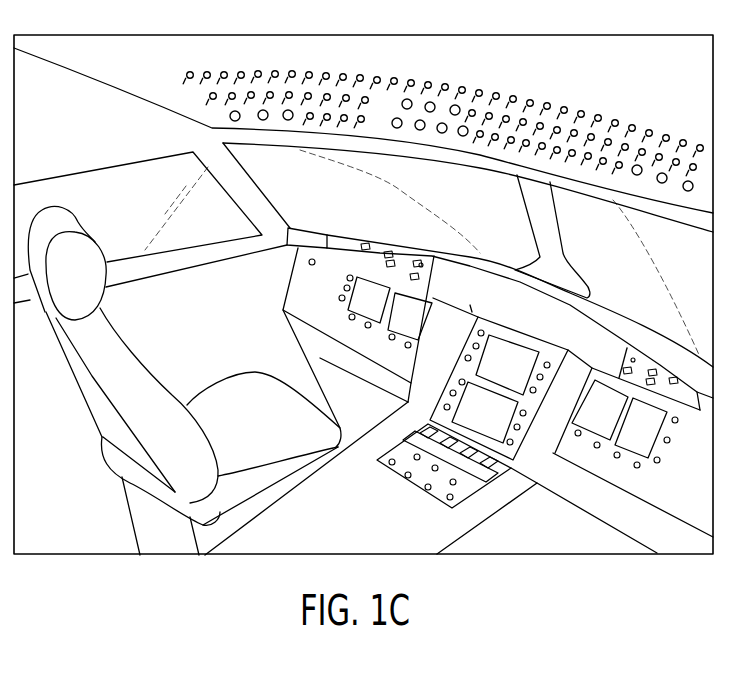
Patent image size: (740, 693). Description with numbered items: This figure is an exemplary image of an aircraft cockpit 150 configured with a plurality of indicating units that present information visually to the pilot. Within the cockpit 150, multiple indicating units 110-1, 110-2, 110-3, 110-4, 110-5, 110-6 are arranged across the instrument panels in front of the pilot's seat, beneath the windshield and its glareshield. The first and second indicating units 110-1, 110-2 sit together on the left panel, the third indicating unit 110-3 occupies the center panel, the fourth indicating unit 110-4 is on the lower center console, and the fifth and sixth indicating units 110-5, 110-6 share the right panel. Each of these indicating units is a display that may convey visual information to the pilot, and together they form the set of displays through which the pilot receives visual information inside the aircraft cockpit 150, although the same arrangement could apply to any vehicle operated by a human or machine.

The aircraft cockpit 150 is at (363, 350).
The indicating unit 110-1 is at (368, 298).
The indicating unit 110-2 is at (410, 318).
The indicating unit 110-3 is at (507, 358).
The indicating unit 110-4 is at (414, 455).
The indicating unit 110-5 is at (602, 410).
The indicating unit 110-6 is at (640, 430).